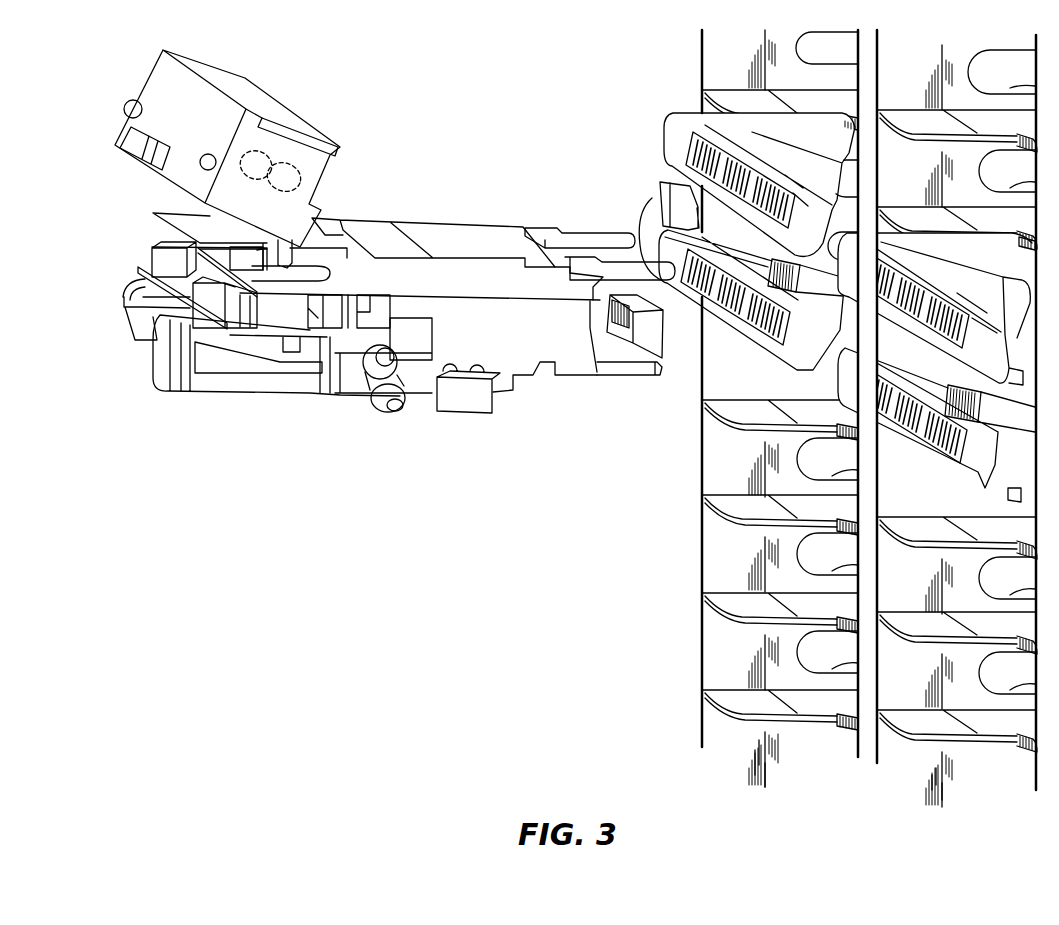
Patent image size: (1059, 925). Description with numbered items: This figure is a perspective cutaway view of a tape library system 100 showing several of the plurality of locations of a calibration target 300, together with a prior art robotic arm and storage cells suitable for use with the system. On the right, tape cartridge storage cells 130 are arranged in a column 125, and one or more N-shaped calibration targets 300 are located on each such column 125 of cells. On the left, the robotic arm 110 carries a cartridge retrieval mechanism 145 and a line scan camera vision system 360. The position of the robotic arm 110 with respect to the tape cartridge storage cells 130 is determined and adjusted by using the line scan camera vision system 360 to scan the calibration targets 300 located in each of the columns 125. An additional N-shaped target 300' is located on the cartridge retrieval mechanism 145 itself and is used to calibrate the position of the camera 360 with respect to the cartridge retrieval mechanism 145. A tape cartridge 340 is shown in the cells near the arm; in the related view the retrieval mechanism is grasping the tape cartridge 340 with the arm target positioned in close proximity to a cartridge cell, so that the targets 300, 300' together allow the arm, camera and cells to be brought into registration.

The tape library system 100 is at (508, 552).
The robotic arm 110 is at (434, 237).
The column 125 is at (827, 727).
The tape cartridge storage cells 130 is at (730, 643).
The cartridge retrieval mechanism 145 is at (588, 232).
The calibration target 300 is at (833, 366).
The N-shaped target 300' is at (604, 371).
The tape cartridge 340 is at (672, 140).
The line scan camera vision system 360 is at (313, 122).